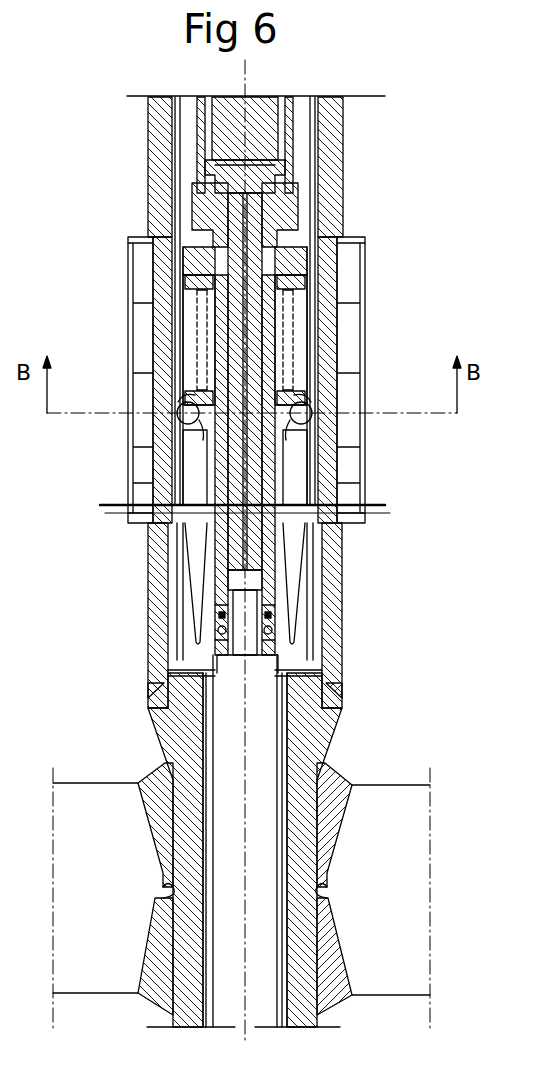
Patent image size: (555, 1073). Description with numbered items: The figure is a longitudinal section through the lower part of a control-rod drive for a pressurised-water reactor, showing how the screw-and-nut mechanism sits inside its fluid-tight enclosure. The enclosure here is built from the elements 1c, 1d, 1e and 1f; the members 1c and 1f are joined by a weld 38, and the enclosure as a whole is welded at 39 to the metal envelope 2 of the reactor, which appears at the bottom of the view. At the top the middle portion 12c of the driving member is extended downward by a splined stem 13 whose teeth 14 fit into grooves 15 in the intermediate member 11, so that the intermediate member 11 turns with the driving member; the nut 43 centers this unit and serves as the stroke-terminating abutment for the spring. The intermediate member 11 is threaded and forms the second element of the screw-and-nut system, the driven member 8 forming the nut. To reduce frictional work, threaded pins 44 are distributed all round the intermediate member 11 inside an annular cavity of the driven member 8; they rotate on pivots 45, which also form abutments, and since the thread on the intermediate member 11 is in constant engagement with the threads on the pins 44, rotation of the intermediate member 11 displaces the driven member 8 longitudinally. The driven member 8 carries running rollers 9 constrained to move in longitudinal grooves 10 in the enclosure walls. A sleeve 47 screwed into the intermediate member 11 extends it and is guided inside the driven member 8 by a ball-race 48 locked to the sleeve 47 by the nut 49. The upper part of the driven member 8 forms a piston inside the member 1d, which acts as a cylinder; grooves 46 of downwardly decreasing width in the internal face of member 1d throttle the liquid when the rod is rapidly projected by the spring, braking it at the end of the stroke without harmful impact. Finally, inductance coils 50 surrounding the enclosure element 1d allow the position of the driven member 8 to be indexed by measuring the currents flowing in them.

The enclosure element 1c is at (135, 235).
The enclosure element 1d is at (165, 108).
The enclosure element 1e is at (147, 190).
The enclosure element 1f is at (177, 733).
The metal envelope 2 is at (103, 800).
The driven member 8 is at (180, 410).
The running rollers 9 is at (173, 424).
The longitudinal grooves 10 is at (173, 490).
The intermediate member 11 is at (200, 150).
The middle portion of driving member 12c is at (270, 121).
The splined stem 13 is at (257, 262).
The teeth 14 is at (245, 342).
The grooves 15 is at (263, 212).
The weld 38 is at (333, 692).
The weld 39 is at (330, 790).
The nut 43 is at (273, 166).
The threaded pins 44 is at (297, 310).
The pivots 45 is at (283, 376).
The grooves 46 is at (178, 257).
The sleeve 47 is at (262, 598).
The ball-race 48 is at (273, 640).
The nut 49 is at (258, 652).
The inductance coils 50 is at (143, 338).